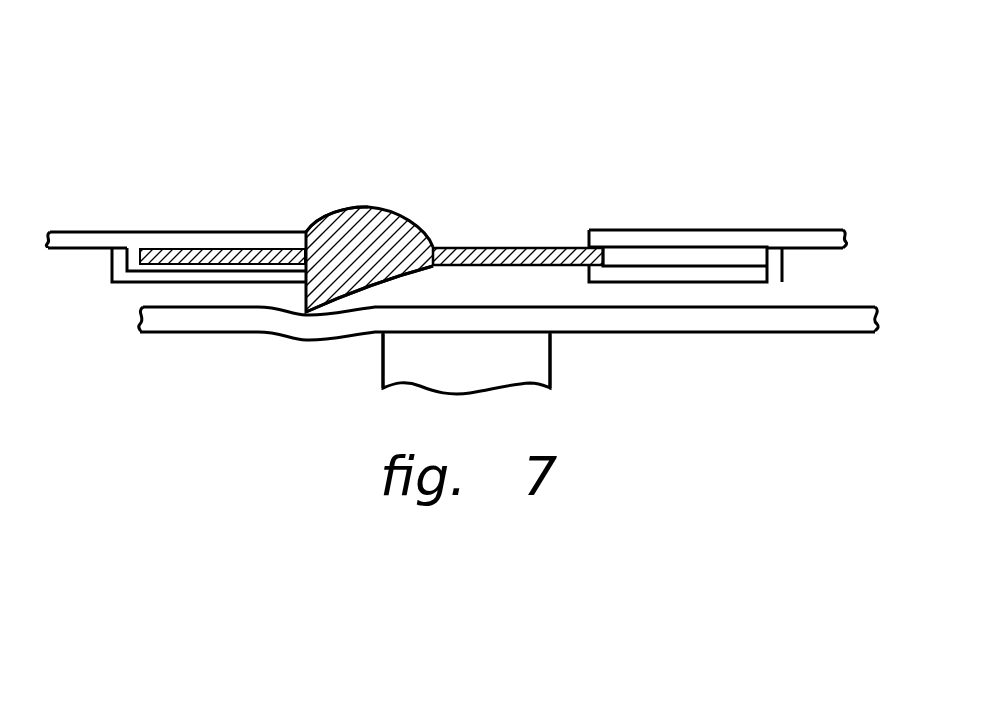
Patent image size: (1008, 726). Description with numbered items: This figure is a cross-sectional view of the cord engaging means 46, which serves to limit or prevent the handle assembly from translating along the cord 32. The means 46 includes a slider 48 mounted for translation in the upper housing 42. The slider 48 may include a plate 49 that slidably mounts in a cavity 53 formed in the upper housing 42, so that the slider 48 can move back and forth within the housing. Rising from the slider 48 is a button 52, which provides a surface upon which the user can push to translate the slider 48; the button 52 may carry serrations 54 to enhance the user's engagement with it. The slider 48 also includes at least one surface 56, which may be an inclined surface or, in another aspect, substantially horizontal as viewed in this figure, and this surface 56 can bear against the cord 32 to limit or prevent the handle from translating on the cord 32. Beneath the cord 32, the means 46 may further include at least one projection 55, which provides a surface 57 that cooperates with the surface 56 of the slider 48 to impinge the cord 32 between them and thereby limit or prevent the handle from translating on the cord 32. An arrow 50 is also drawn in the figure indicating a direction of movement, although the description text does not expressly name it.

The cord 32 is at (762, 333).
The upper housing 42 is at (767, 230).
The means 46 is at (351, 183).
The slider 48 is at (518, 248).
The plate 49 is at (170, 249).
The direction of movement arrow 50 is at (488, 117).
The button 52 is at (322, 222).
The cavity 53 is at (677, 255).
The serrations 54 is at (403, 214).
The projection 55 is at (552, 357).
The surface 56 is at (398, 279).
The surface 57 is at (442, 333).